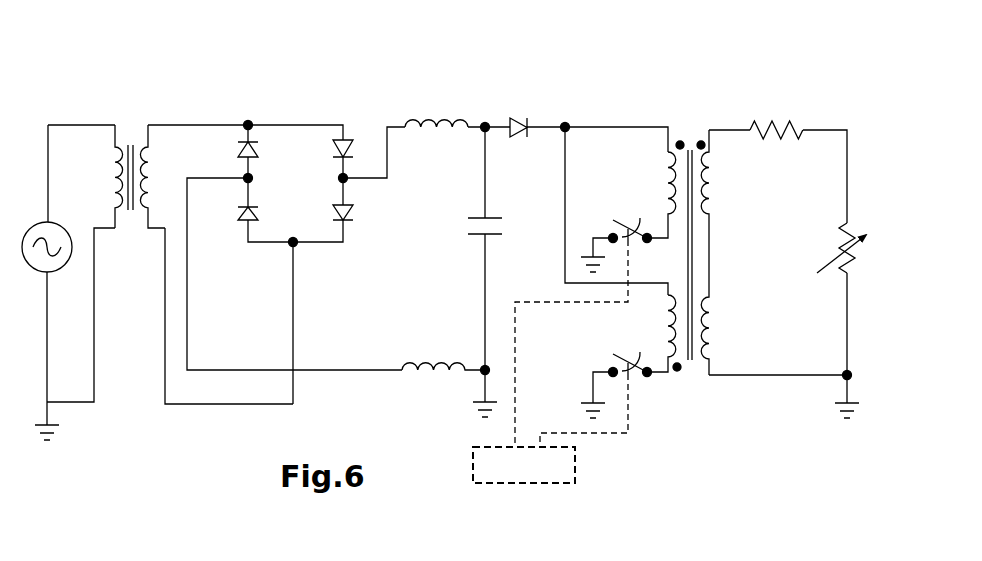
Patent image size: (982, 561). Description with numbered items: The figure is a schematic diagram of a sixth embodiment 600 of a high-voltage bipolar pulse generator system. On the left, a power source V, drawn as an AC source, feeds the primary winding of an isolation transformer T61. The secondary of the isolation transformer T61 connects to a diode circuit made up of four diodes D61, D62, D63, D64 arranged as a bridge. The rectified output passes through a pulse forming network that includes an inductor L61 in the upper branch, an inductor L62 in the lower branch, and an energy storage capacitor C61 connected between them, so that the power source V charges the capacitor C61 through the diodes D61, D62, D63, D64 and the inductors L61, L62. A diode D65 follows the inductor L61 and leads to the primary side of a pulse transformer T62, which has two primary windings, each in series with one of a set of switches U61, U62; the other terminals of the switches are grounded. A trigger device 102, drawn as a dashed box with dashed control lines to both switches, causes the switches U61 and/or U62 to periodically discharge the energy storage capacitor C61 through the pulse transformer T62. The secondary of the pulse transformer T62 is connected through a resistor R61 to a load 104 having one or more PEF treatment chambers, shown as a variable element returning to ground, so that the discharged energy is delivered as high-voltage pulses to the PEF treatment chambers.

The sixth embodiment of the high-voltage bipolar pulse generator system 600 is at (72, 99).
The isolation transformer T61 is at (134, 230).
The diode D61 is at (227, 153).
The diode D62 is at (320, 152).
The diode D63 is at (227, 226).
The diode D64 is at (320, 214).
The inductor L61 is at (436, 109).
The diode D65 is at (520, 114).
The energy storage capacitor C61 is at (470, 248).
The inductor L62 is at (443, 352).
The switch U61 is at (588, 319).
The switch U62 is at (601, 385).
The pulse transformer T62 is at (698, 394).
The resistor R61 is at (776, 118).
The load 104 is at (845, 228).
The trigger device 102 is at (482, 484).